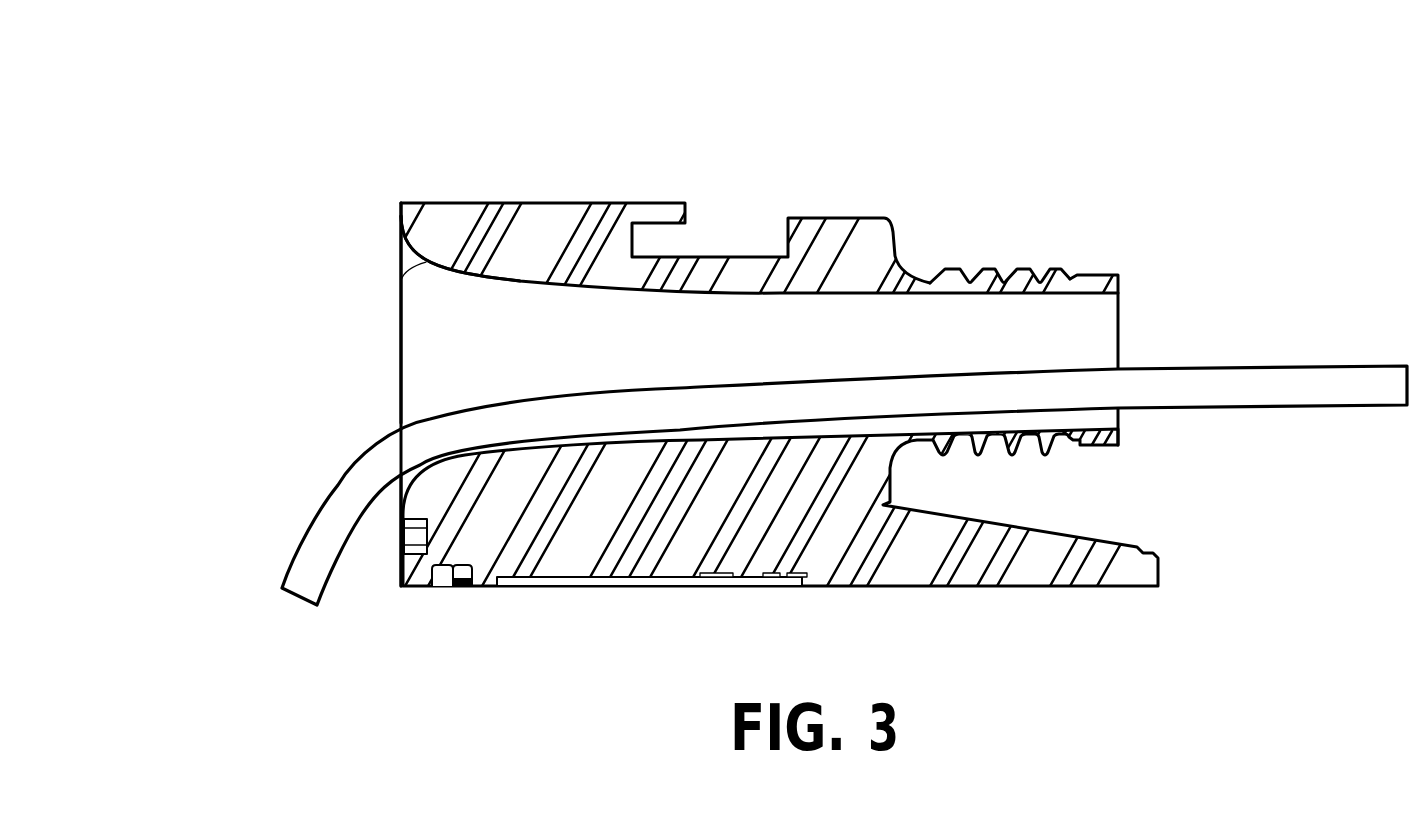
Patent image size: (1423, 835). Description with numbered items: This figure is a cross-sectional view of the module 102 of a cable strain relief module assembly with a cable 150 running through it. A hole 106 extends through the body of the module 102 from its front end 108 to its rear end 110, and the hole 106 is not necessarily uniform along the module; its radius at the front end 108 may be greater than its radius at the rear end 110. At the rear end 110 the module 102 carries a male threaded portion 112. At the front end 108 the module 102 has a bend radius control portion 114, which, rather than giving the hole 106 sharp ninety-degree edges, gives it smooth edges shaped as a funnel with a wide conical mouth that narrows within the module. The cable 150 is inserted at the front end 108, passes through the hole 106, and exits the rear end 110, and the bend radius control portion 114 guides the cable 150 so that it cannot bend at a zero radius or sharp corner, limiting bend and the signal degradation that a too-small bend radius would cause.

The module 102 is at (540, 202).
The hole 106 is at (380, 369).
The front end 108 is at (403, 587).
The rear end 110 is at (1117, 274).
The male threaded portion 112 is at (990, 268).
The bend radius control portion 114 is at (401, 280).
The cable 150 is at (327, 497).